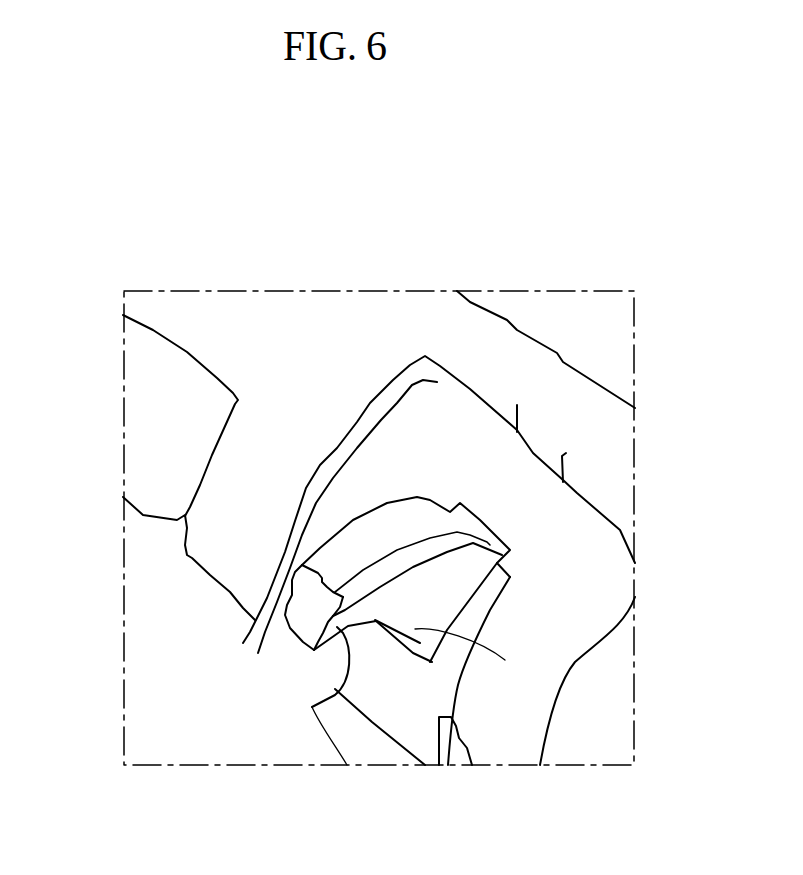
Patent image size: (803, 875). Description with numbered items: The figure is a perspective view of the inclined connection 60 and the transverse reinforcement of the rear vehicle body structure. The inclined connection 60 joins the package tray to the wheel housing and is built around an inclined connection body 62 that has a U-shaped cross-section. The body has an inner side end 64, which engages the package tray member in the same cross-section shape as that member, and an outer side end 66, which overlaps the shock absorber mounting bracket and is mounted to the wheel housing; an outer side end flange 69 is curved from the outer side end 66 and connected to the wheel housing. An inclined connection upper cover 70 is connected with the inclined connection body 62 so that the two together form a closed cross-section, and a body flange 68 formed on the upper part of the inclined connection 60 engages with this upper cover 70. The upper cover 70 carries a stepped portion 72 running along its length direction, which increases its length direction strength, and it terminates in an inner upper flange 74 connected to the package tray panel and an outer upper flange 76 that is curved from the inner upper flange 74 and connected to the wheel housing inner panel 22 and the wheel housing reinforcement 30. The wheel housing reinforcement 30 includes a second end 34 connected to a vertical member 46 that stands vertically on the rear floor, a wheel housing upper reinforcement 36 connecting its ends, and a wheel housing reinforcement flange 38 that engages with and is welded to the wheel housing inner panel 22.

The wheel housing inner panel 22 is at (397, 683).
The wheel housing reinforcement 30 is at (405, 757).
The second end 34 is at (305, 585).
The wheel housing upper reinforcement 36 is at (540, 503).
The wheel housing reinforcement flange 38 is at (593, 637).
The vertical member 46 is at (336, 634).
The inclined connection 60 is at (312, 665).
The inclined connection body 62 is at (333, 647).
The inner side end 64 is at (322, 641).
The outer side end 66 is at (505, 660).
The body flange 68 is at (312, 565).
The outer side end flange 69 is at (432, 652).
The inclined connection upper cover 70 is at (367, 505).
The stepped portion 72 is at (363, 547).
The inner upper flange 74 is at (320, 511).
The outer upper flange 76 is at (480, 535).